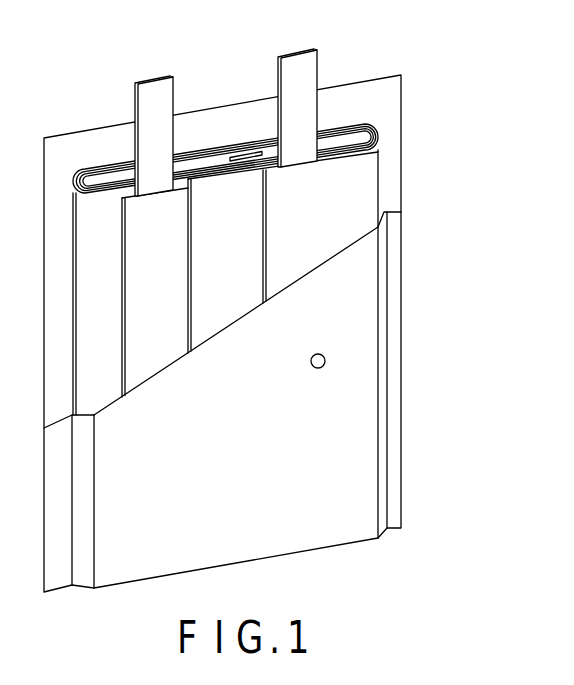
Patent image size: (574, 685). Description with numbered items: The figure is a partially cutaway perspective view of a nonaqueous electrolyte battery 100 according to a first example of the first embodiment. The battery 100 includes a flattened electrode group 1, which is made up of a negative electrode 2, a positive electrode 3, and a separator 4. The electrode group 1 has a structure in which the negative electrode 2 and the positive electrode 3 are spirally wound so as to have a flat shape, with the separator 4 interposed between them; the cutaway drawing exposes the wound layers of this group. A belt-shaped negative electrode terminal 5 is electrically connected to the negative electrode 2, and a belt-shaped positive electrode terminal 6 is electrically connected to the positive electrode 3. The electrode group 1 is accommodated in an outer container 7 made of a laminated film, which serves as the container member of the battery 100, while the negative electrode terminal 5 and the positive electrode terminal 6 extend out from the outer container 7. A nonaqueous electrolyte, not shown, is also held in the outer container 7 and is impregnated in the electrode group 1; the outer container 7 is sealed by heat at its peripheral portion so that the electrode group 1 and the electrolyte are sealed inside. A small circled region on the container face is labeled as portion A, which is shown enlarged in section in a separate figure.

The nonaqueous electrolyte battery 100 is at (280, 298).
The electrode group 1 is at (286, 331).
The negative electrode 2 is at (465, 272).
The positive electrode 3 is at (160, 259).
The separator 4 is at (243, 214).
The negative electrode terminal 5 is at (300, 68).
The positive electrode terminal 6 is at (154, 90).
The outer container 7 is at (353, 436).
The portion A is at (326, 360).